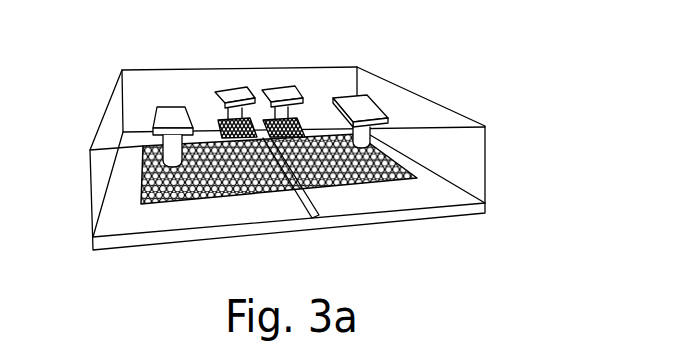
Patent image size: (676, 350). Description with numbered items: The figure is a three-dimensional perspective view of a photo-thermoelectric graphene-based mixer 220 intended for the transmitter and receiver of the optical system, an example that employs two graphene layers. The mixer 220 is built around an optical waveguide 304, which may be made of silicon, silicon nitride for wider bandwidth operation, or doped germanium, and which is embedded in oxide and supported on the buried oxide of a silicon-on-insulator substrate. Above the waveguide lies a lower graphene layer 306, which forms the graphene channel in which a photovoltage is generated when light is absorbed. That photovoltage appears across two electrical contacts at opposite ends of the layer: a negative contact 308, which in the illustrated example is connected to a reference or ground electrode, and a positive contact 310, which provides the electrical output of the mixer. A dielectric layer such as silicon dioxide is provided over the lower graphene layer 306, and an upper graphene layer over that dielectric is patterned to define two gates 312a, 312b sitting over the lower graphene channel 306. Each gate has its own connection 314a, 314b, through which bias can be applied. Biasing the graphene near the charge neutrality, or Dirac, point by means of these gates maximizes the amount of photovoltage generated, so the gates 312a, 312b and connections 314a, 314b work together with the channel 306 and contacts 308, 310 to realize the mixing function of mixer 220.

The graphene-based mixer 220 is at (453, 223).
The optical waveguide 304 is at (307, 201).
The lower graphene layer 306 is at (247, 190).
The negative electrical contact 308 is at (163, 114).
The positive electrical contact 310 is at (367, 108).
The gate 312a is at (220, 122).
The gate 312b is at (300, 128).
The connection 314a is at (232, 93).
The connection 314b is at (287, 90).